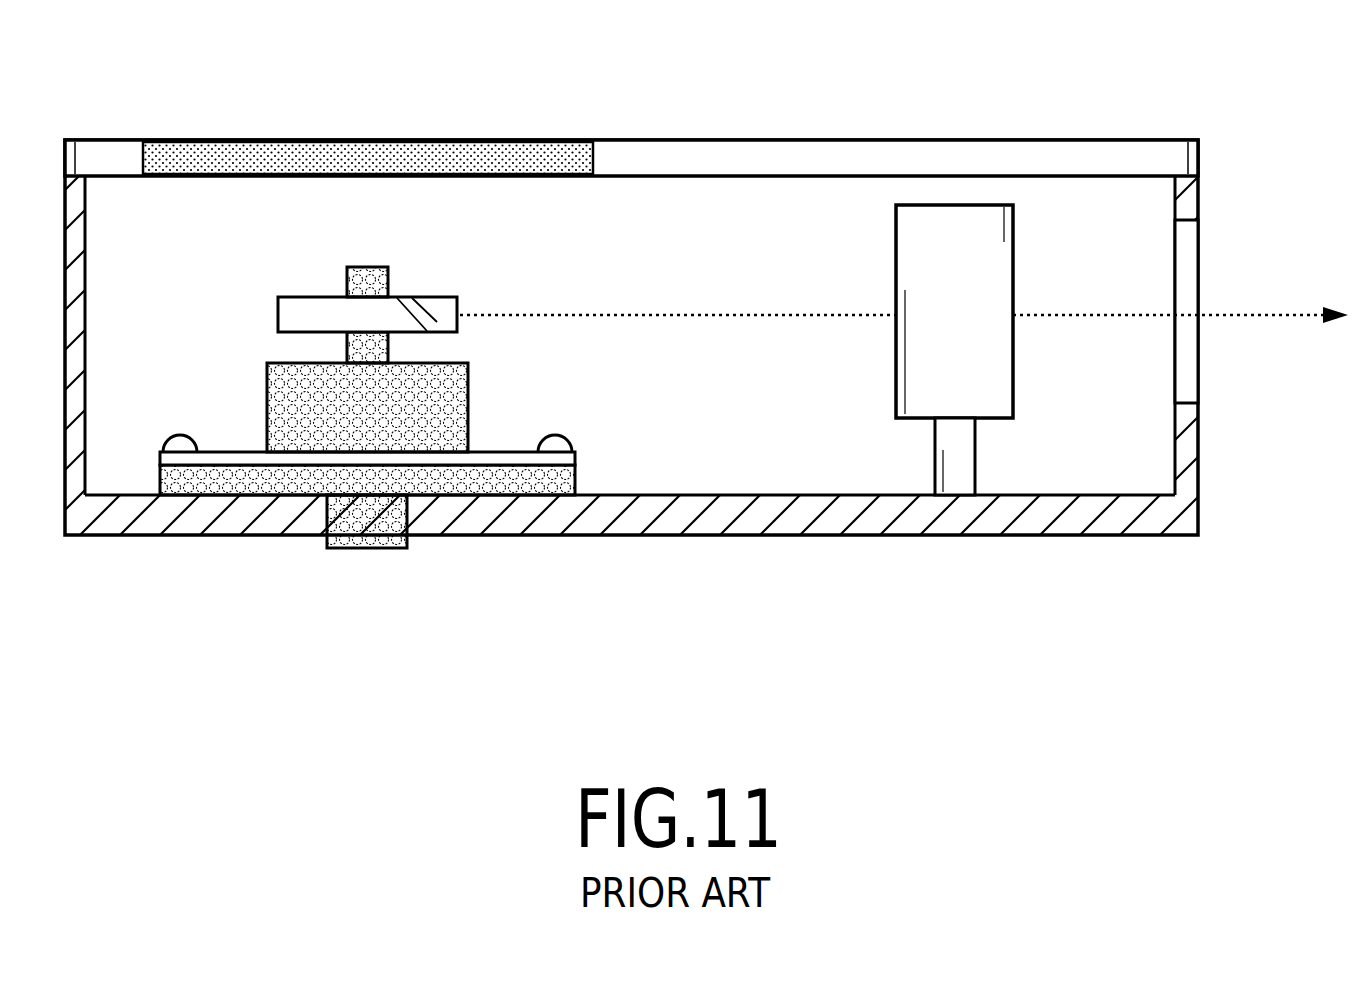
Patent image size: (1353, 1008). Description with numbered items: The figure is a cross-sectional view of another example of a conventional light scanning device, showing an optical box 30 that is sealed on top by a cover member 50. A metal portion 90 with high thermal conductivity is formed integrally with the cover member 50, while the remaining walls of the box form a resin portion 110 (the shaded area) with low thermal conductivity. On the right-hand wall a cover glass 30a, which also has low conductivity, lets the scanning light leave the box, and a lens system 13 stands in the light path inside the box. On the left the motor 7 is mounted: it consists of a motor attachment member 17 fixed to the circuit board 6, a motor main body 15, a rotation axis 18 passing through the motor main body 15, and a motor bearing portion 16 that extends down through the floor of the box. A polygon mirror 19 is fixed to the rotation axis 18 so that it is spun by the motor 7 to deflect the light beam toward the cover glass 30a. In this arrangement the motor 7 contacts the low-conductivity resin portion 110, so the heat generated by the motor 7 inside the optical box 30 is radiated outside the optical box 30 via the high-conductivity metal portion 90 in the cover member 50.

The optical box 30 is at (676, 330).
The cover glass 30a is at (1187, 360).
The cover member 50 is at (631, 126).
The metal portion 90 is at (353, 153).
The resin portion 110 is at (772, 537).
The lens system 13 is at (988, 252).
The motor 7 is at (404, 435).
The rotation axis 18 is at (347, 282).
The polygon mirror 19 is at (413, 298).
The motor main body 15 is at (270, 392).
The circuit board 6 is at (500, 460).
The motor attachment member 17 is at (577, 480).
The motor bearing portion 16 is at (370, 548).